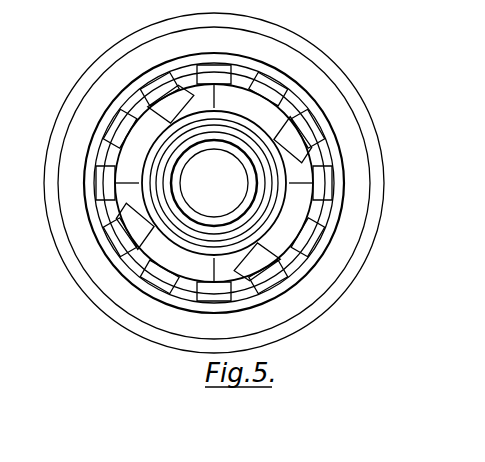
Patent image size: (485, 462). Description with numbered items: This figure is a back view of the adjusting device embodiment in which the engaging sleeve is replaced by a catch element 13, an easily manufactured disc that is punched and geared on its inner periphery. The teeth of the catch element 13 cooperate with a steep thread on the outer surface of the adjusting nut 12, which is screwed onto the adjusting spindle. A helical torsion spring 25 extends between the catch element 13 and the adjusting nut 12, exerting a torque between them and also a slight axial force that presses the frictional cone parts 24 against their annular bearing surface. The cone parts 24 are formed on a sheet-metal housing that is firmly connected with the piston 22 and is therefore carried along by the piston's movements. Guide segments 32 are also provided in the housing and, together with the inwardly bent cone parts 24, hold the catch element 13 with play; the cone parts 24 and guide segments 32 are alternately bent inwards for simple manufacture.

The adjusting nut 12 is at (215, 242).
The catch element 13 is at (312, 163).
The piston 22 is at (353, 223).
The cone parts 24 is at (275, 87).
The helical torsion spring 25 is at (171, 104).
The guide segments 32 is at (247, 62).